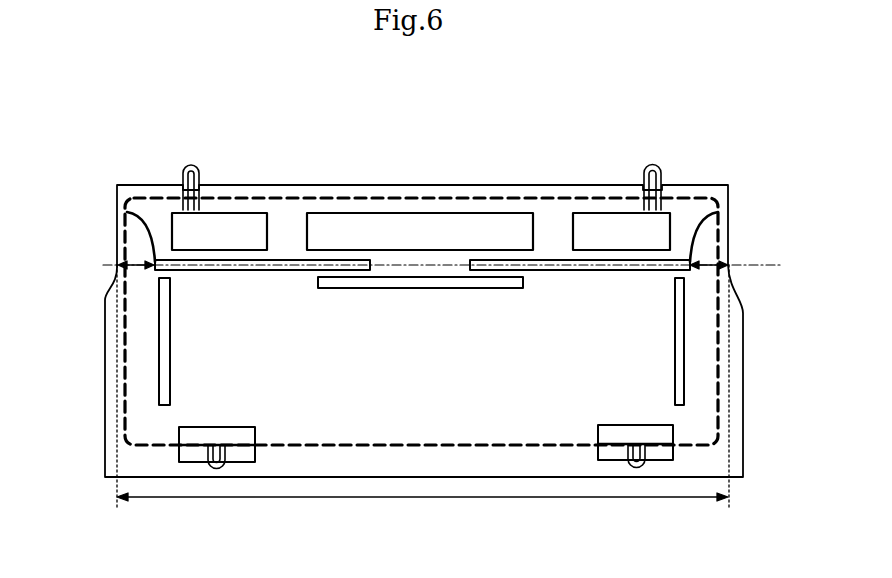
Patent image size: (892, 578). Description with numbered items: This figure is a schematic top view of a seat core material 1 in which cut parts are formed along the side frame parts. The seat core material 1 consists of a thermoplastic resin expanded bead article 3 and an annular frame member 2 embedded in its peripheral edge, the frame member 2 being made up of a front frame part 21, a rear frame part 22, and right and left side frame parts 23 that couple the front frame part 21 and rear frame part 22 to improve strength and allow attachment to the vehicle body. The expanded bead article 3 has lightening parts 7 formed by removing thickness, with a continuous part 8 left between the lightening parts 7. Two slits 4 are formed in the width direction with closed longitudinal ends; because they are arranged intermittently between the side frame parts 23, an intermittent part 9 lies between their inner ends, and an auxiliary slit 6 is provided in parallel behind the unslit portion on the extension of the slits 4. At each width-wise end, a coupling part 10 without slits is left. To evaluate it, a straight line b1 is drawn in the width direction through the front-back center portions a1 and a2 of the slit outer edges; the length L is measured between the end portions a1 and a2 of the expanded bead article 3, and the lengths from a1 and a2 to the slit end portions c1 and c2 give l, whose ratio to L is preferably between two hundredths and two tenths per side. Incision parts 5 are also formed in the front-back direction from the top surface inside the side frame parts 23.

The seat core material 1 is at (683, 162).
The frame member 2 is at (722, 192).
The thermoplastic resin expanded bead article 3 is at (630, 377).
The slit 4 is at (333, 263).
The incision part 5 is at (165, 392).
The auxiliary slit 6 is at (450, 282).
The lightening part 7 is at (233, 222).
The continuous part 8 is at (285, 233).
The intermittent part 9 is at (420, 264).
The coupling part 10 is at (130, 264).
The front frame part 21 is at (481, 452).
The rear frame part 22 is at (497, 197).
The side frame part 23 is at (126, 365).
The end portion of the expanded bead article a1 is at (118, 265).
The end portion of the expanded bead article a2 is at (728, 265).
The straight line b1 is at (765, 265).
The end portion of the slit c1 is at (138, 258).
The end portion of the slit c2 is at (700, 255).
The width-wise length L is at (422, 510).